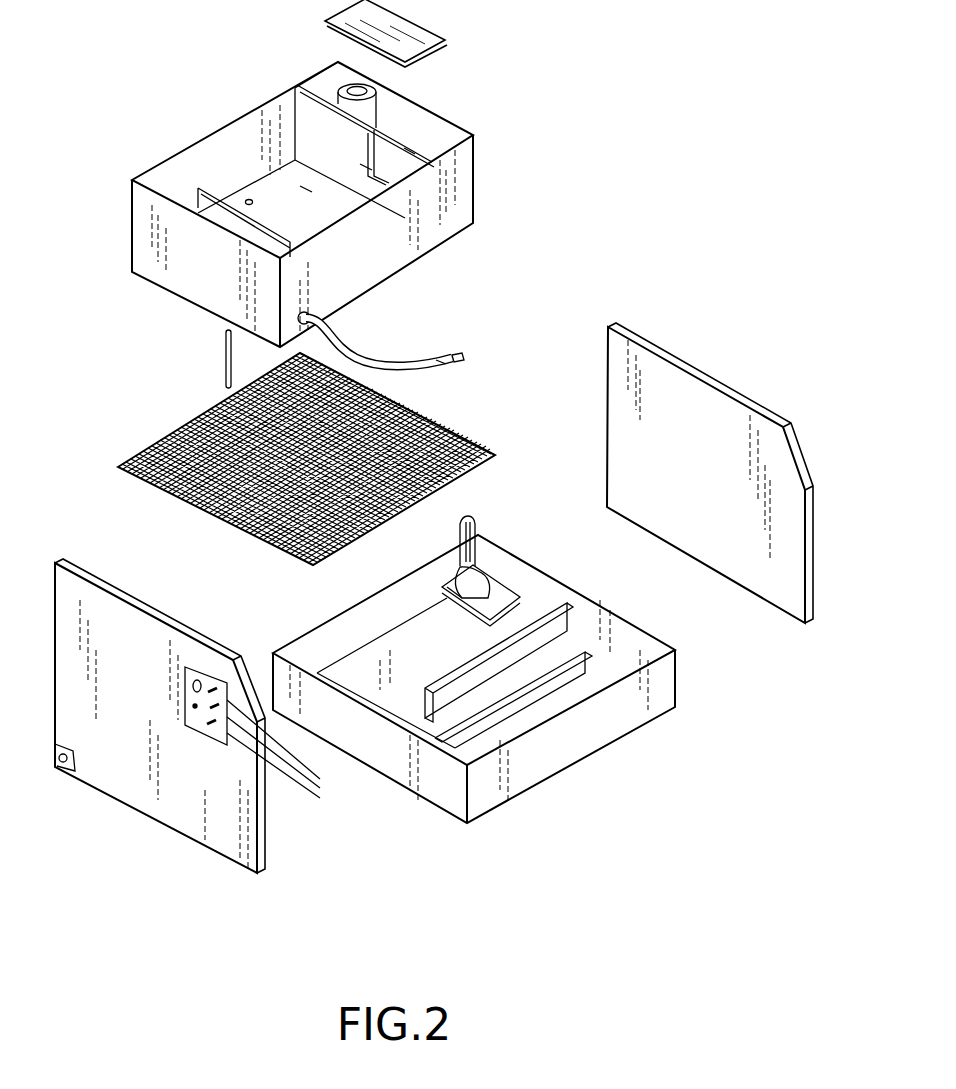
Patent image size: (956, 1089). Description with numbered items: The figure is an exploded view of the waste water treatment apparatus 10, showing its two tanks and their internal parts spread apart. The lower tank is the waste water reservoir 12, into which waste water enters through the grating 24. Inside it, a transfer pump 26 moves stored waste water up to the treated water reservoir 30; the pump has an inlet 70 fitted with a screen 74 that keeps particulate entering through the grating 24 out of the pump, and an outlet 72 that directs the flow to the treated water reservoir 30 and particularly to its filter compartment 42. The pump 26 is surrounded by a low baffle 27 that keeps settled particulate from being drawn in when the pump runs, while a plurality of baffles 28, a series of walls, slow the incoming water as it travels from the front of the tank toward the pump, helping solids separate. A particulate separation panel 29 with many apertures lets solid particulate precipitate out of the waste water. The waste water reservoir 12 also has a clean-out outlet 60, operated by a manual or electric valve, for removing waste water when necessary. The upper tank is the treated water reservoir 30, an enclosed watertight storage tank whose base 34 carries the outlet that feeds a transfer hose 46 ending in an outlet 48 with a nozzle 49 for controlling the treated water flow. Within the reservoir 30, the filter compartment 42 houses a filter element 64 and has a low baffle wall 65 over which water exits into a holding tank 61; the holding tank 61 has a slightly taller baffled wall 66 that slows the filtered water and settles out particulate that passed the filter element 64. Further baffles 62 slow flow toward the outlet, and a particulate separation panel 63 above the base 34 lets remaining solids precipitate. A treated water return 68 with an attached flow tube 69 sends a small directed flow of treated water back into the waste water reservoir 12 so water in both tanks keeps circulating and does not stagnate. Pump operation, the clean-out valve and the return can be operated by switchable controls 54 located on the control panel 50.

The waste water treatment apparatus 10 is at (618, 214).
The waste water reservoir 12 is at (683, 678).
The grating 24 is at (464, 442).
The transfer pump 26 is at (480, 582).
The low baffle 27 is at (457, 592).
The baffles 28 is at (562, 676).
The particulate separation panel 29 is at (392, 669).
The treated water reservoir 30 is at (480, 163).
The base 34 is at (384, 290).
The filter compartment 42 is at (386, 104).
The transfer hose 46 is at (374, 361).
The outlet 48 is at (441, 368).
The nozzle 49 is at (458, 356).
The control panel 50 is at (196, 670).
The switchable controls 54 is at (289, 755).
The clean-out outlet 60 is at (76, 763).
The holding tank 61 is at (408, 156).
The baffles 62 is at (410, 232).
The particulate separation panel 63 is at (267, 196).
The filter element 64 is at (396, 96).
The low baffle wall 65 is at (366, 166).
The baffled wall 66 is at (306, 189).
The treated water return 68 is at (250, 200).
The flow tube 69 is at (224, 360).
The inlet 70 is at (508, 590).
The outlet 72 is at (470, 522).
The screen 74 is at (494, 598).